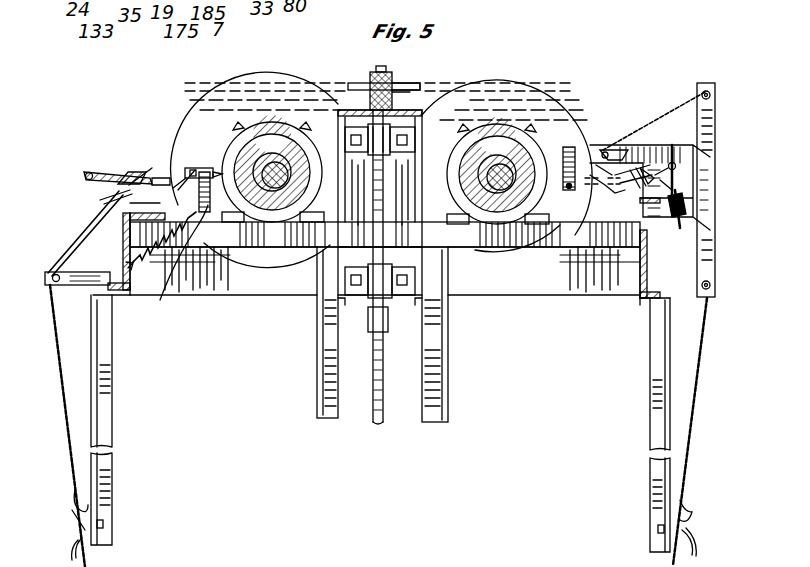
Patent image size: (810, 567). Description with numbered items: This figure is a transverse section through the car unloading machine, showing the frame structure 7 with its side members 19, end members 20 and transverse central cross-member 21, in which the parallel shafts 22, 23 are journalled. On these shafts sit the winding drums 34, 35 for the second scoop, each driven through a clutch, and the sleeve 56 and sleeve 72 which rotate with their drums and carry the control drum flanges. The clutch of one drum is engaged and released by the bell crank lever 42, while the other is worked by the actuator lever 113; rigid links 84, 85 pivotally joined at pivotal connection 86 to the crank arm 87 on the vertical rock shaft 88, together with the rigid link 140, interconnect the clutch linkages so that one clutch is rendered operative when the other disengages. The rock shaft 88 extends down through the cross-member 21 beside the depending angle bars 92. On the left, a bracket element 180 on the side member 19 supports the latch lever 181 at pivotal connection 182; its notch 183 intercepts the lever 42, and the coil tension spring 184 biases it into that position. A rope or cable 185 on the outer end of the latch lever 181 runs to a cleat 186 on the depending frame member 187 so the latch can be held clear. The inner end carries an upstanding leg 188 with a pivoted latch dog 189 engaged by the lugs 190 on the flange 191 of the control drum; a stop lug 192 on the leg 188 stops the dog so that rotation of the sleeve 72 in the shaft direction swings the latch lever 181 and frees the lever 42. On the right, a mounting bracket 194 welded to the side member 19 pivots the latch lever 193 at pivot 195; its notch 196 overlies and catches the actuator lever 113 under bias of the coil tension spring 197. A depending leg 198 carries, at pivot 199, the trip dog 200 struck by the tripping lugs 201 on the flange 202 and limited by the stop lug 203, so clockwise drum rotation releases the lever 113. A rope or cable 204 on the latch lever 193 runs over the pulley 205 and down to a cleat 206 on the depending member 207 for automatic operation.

The frame structure 7 is at (610, 295).
The side member 19 is at (127, 252).
The end member 20 is at (291, 275).
The transverse central cross-member 21 is at (503, 240).
The shaft 22 is at (500, 150).
The shaft 23 is at (280, 140).
The winding drum 34 is at (440, 115).
The winding drum 35 is at (313, 108).
The bell crank lever 42 is at (134, 166).
The sleeve 56 is at (470, 165).
The sleeve 72 is at (282, 220).
The rigid link 84 is at (408, 88).
The rigid link 85 is at (356, 82).
The pivotal connection 86 is at (384, 68).
The crank arm 87 is at (412, 97).
The rock shaft 88 is at (372, 412).
The angle bar 92 is at (318, 380).
The actuator lever 113 is at (643, 170).
The rigid link 140 is at (632, 168).
The bracket element 180 is at (128, 228).
The latch lever 181 is at (100, 172).
The pivotal connection 182 is at (178, 148).
The notch 183 is at (104, 202).
The coil tension spring 184 is at (150, 265).
The rope or cable 185 is at (70, 230).
The cleat 186 is at (76, 542).
The depending frame member 187 is at (110, 468).
The upstanding leg 188 is at (214, 262).
The latch dog 189 is at (194, 168).
The lugs 190 is at (240, 140).
The flange 191 is at (266, 160).
The stop lug 192 is at (182, 165).
The latch lever 193 is at (588, 150).
The mounting bracket 194 is at (660, 147).
The pivot 195 is at (606, 155).
The notch 196 is at (676, 168).
The coil tension spring 197 is at (686, 204).
The depending leg 198 is at (578, 145).
The pivot 199 is at (572, 190).
The trip dog 200 is at (562, 140).
The tripping lugs 201 is at (540, 140).
The flange 202 is at (490, 137).
The stop lug 203 is at (588, 250).
The rope or cable 204 is at (692, 108).
The pulley 205 is at (712, 95).
The cleat 206 is at (690, 512).
The depending member 207 is at (657, 472).